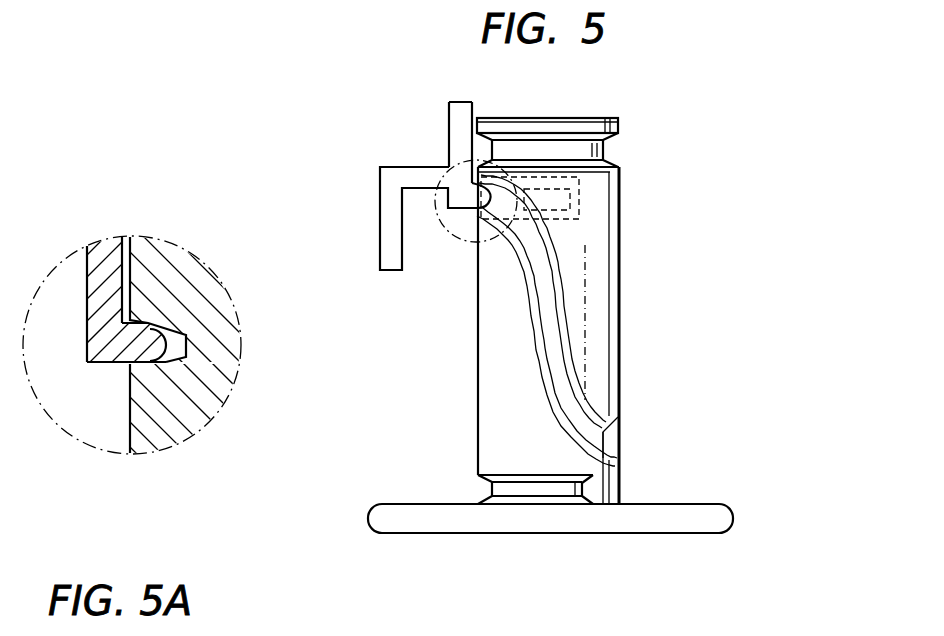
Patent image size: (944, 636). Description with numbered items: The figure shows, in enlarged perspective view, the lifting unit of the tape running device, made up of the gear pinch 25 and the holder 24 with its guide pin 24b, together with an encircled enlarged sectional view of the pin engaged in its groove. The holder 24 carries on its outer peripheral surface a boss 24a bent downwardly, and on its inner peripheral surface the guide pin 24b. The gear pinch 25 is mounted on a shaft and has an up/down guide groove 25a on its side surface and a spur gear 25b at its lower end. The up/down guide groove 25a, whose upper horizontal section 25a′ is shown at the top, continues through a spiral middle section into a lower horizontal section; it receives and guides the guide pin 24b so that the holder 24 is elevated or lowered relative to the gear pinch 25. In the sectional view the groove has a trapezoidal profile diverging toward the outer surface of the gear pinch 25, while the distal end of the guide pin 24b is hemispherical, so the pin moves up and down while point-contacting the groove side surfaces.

In FIG. 5, the holder 24 is at (447, 137).
In FIG. 5, the boss 24a is at (388, 181).
In FIG. 5, the guide pin 24b is at (470, 206).
In FIG. 5A, the guide pin 24b is at (120, 363).
In FIG. 5, the gear pinch 25 is at (632, 354).
In FIG. 5A, the gear pinch 25 is at (168, 262).
In FIG. 5, the up/down guide groove 25a is at (656, 336).
In FIG. 5A, the up/down guide groove 25a is at (180, 347).
In FIG. 5, the upper horizontal section 25a′ is at (580, 205).
In FIG. 5, the spur gear 25b is at (572, 482).